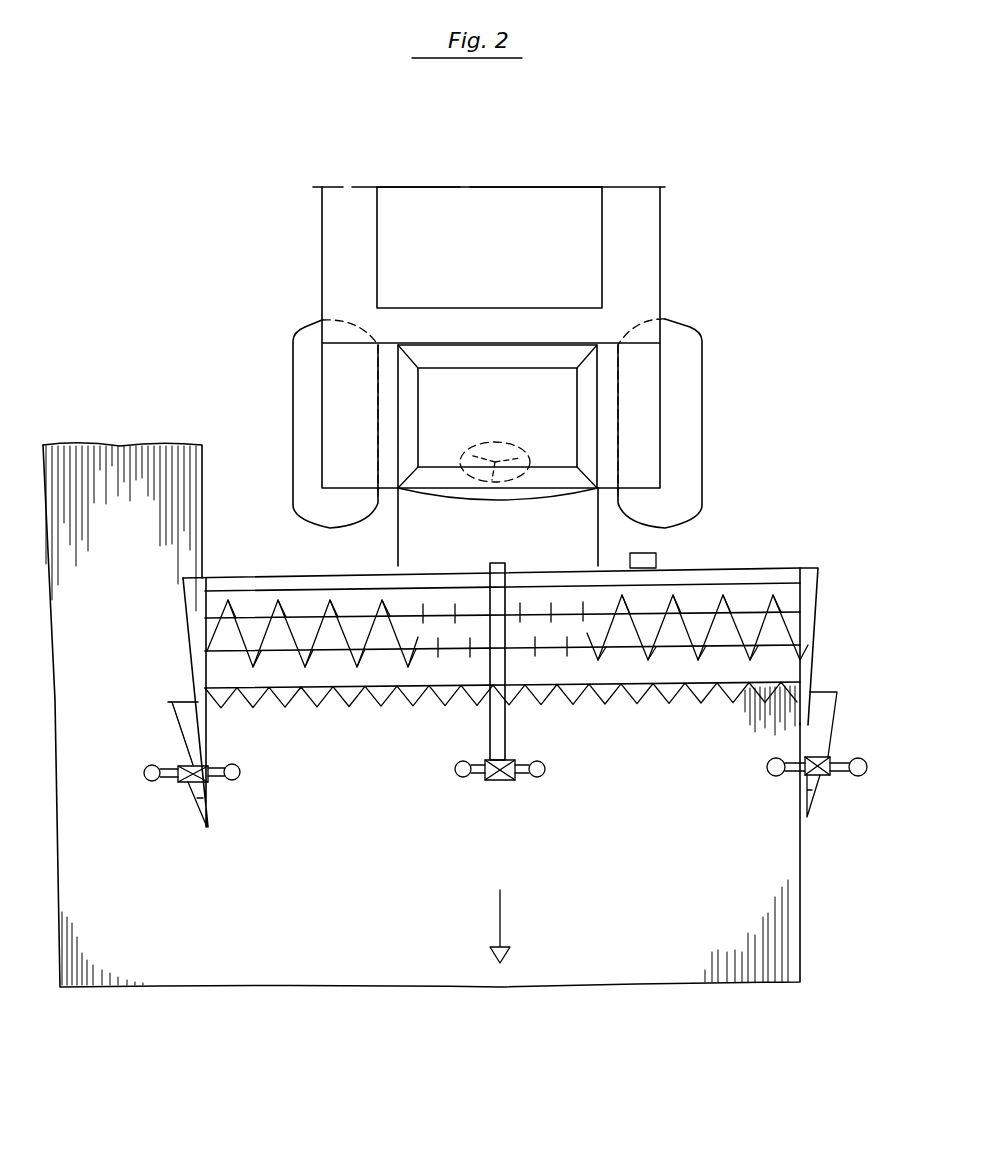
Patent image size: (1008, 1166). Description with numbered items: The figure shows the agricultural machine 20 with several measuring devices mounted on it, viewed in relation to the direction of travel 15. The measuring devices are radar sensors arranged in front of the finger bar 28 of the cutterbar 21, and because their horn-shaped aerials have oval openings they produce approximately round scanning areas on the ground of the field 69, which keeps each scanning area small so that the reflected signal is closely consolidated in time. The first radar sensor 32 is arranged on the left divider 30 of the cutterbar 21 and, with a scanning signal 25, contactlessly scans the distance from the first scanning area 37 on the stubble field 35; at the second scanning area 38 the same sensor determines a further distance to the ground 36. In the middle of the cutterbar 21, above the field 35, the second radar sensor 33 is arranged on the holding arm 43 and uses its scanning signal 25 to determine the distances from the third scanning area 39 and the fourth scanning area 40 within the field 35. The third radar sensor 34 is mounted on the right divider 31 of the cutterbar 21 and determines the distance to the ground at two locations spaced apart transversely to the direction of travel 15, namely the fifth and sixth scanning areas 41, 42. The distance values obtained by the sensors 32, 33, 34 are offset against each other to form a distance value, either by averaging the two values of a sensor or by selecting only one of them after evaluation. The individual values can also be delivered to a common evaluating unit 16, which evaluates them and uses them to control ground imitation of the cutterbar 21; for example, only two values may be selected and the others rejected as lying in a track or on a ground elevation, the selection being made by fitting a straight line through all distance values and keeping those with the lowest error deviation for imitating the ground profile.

The direction of travel 15 is at (496, 950).
The evaluating unit 16 is at (641, 562).
The agricultural machine 20 is at (672, 293).
The cutterbar 21 is at (770, 568).
The scanning signal 25 is at (215, 765).
The finger bar 28 is at (378, 705).
The left divider 30 is at (830, 692).
The right divider 31 is at (178, 702).
The first radar sensor 32 is at (820, 757).
The second radar sensor 33 is at (500, 782).
The third radar sensor 34 is at (190, 784).
The stubble field 35 is at (356, 957).
The ground 36 is at (849, 357).
The first scanning area 37 is at (862, 776).
The second scanning area 38 is at (771, 776).
The third scanning area 39 is at (545, 772).
The fourth scanning area 40 is at (455, 775).
The fifth scanning area 41 is at (236, 780).
The sixth scanning area 42 is at (143, 777).
The holding arm 43 is at (490, 712).
The field 69 is at (228, 432).